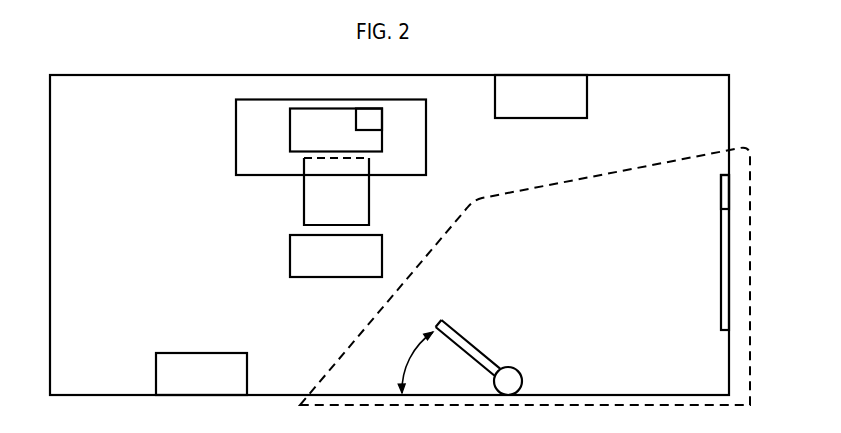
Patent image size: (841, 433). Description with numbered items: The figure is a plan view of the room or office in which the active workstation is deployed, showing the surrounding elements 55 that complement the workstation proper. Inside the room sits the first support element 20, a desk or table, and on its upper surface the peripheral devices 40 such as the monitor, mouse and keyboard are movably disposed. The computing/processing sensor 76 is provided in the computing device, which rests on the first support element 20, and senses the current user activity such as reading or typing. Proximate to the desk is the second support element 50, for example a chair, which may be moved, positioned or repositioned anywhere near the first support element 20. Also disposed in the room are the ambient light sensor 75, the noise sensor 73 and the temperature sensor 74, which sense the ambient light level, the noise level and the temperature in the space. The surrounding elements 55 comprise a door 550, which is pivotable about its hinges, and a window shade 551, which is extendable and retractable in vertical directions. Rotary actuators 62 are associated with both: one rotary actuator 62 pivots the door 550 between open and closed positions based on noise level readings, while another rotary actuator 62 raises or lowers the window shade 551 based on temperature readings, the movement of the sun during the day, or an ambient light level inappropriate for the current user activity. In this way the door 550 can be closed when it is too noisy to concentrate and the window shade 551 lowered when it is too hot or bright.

The first support element 20 is at (331, 138).
The peripheral devices 40 is at (336, 130).
The computing/processing sensor 76 is at (373, 122).
The second support element 50 is at (336, 191).
The ambient light sensor 75 is at (336, 256).
The noise sensor 73 is at (541, 96).
The temperature sensor 74 is at (201, 374).
The surrounding elements 55 is at (750, 332).
The window shade 551 is at (721, 283).
The rotary actuators 62 is at (721, 189).
The door 550 is at (443, 319).